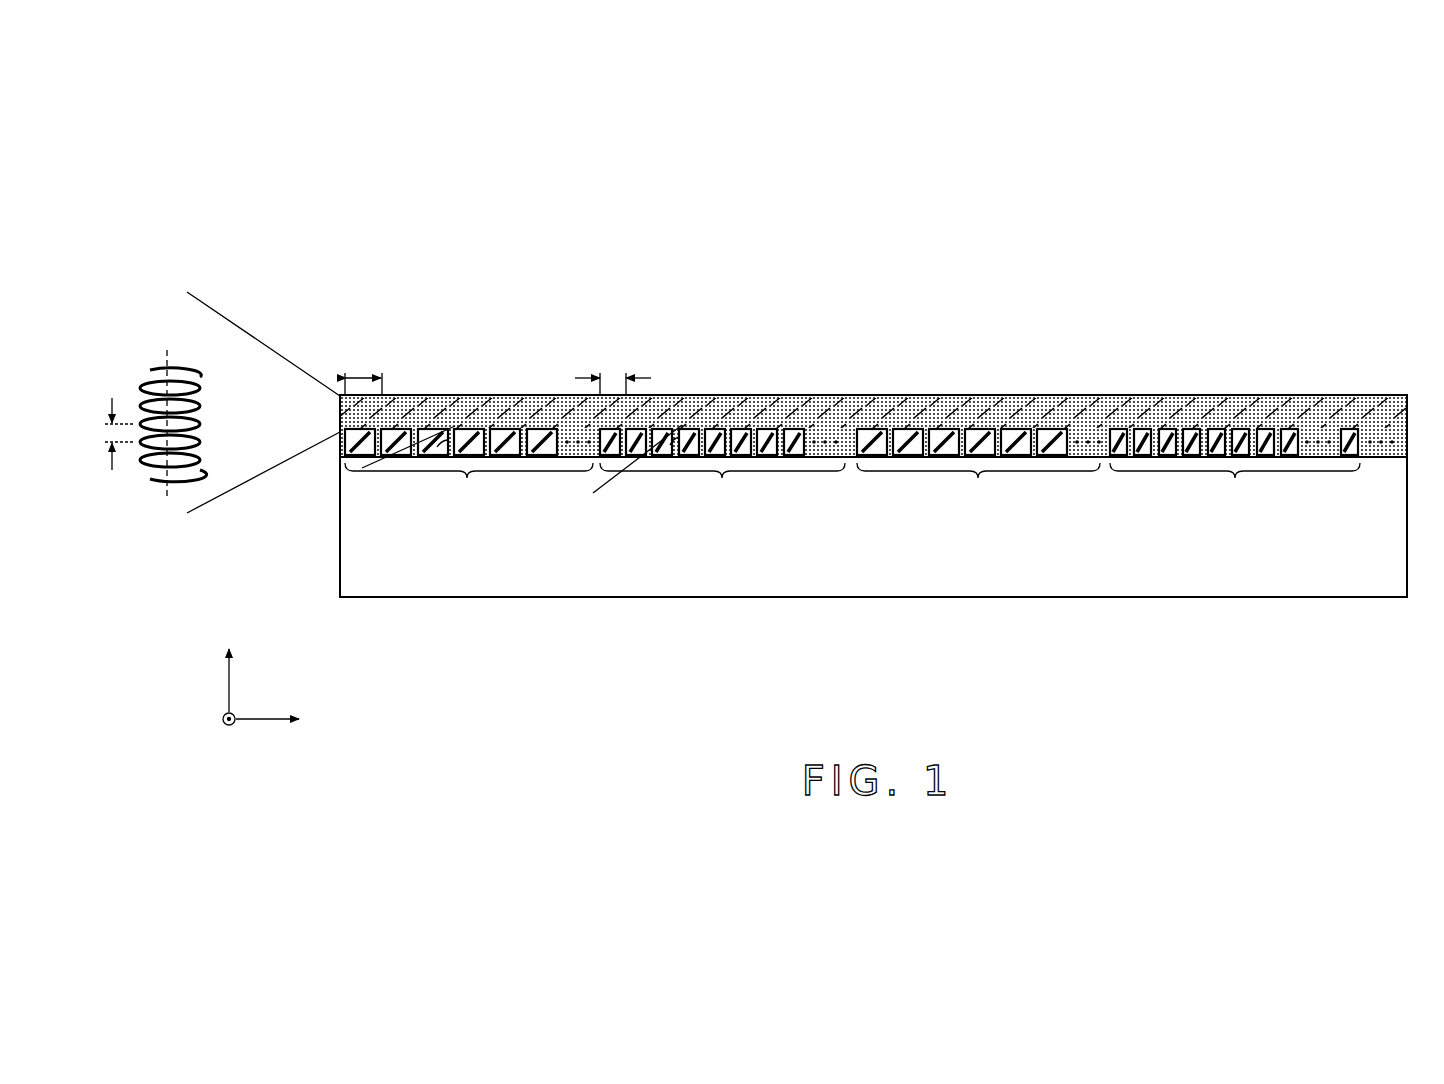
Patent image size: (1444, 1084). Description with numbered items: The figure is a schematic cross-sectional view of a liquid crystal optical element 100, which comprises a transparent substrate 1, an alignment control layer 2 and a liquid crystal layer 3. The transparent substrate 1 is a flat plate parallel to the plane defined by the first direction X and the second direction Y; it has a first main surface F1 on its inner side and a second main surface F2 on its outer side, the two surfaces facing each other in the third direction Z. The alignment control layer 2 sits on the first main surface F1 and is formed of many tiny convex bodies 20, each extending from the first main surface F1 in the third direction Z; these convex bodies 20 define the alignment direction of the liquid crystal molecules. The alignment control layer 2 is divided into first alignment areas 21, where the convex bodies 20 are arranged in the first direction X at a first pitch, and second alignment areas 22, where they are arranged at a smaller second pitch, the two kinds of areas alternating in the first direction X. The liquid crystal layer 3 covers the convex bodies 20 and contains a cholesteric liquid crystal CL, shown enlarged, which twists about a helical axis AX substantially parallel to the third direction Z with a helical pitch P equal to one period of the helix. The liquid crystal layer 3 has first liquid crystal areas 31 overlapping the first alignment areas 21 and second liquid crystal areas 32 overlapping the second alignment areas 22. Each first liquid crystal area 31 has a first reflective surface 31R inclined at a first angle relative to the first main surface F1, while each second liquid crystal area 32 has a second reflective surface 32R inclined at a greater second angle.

The liquid crystal optical element 100 is at (882, 292).
The transparent substrate 1 is at (1385, 531).
The liquid crystal layer 3 is at (1407, 393).
The alignment control layer 2 is at (873, 469).
The convex bodies 20 is at (518, 412).
The first alignment areas 21 is at (722, 485).
The second alignment areas 22 is at (980, 485).
The first liquid crystal areas 31 is at (396, 410).
The first reflective surface 31R is at (472, 393).
The second liquid crystal areas 32 is at (664, 410).
The second reflective surface 32R is at (717, 393).
The first main surface F1 is at (868, 448).
The second main surface F2 is at (887, 600).
The cholesteric liquid crystal CL is at (200, 378).
The helical axis AX is at (166, 356).
The helical pitch P is at (100, 432).
The first direction X is at (279, 720).
The second direction Y is at (219, 730).
The third direction Z is at (229, 666).